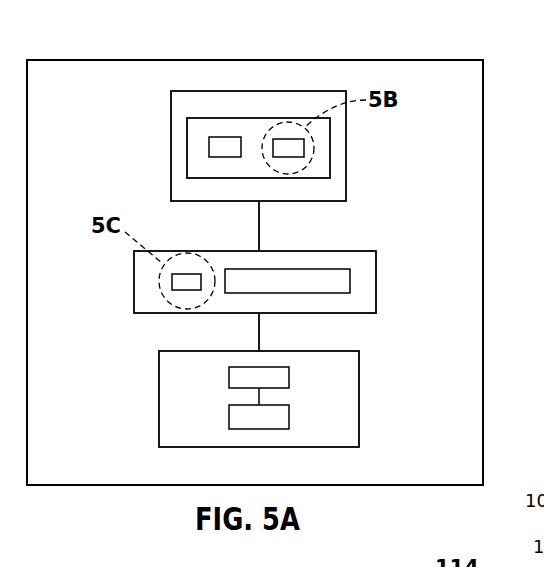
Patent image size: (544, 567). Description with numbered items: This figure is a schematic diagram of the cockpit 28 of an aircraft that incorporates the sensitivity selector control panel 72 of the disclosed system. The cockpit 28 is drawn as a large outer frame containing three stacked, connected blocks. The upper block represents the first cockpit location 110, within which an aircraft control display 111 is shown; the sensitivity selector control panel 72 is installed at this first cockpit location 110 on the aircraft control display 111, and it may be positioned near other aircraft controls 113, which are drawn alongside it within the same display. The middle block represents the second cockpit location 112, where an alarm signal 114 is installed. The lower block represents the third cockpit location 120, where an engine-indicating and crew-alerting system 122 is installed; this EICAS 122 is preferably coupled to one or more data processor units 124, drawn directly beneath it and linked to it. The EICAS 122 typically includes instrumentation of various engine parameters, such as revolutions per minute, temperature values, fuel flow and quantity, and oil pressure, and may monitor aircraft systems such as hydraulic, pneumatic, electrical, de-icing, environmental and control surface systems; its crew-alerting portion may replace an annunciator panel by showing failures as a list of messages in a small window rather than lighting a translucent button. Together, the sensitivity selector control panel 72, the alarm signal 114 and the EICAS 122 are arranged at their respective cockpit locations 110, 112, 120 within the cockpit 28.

The cockpit 28 is at (417, 60).
The first cockpit location 110 is at (346, 137).
The aircraft control display 111 is at (187, 132).
The other aircraft controls 113 is at (209, 147).
The sensitivity selector control panel 72 is at (305, 149).
The second cockpit location 112 is at (376, 278).
The alarm signal 114 is at (171, 282).
The third cockpit location 120 is at (359, 394).
The engine-indicating and crew-alerting system 122 is at (289, 374).
The data processor unit 124 is at (289, 414).